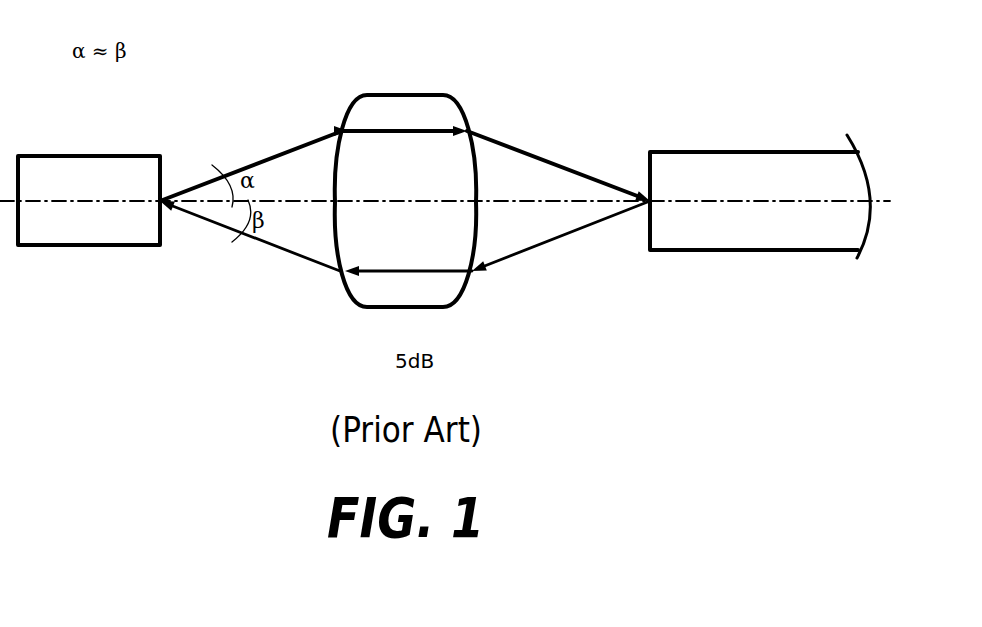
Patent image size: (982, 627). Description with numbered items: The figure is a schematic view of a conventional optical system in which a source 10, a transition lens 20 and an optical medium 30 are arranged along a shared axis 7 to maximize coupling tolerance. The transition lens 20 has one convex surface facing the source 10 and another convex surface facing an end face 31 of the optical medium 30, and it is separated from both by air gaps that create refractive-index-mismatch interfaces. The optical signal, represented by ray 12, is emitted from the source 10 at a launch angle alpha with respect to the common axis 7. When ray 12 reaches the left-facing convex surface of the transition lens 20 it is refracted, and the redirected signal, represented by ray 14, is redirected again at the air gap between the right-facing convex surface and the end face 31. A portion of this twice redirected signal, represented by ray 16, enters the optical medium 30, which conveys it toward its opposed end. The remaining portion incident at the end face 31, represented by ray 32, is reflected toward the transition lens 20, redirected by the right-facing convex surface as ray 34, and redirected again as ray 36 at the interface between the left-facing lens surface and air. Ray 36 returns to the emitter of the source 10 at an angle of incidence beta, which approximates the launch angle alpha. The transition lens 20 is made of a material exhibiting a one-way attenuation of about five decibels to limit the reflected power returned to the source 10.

The shared axis 7 is at (327, 205).
The source 10 is at (147, 225).
The ray 12 is at (293, 148).
The ray 14 is at (408, 133).
The ray 16 is at (493, 135).
The transition lens 20 is at (405, 115).
The optical medium 30 is at (662, 233).
The end face 31 is at (628, 161).
The ray 32 is at (513, 257).
The ray 34 is at (442, 270).
The ray 36 is at (300, 257).